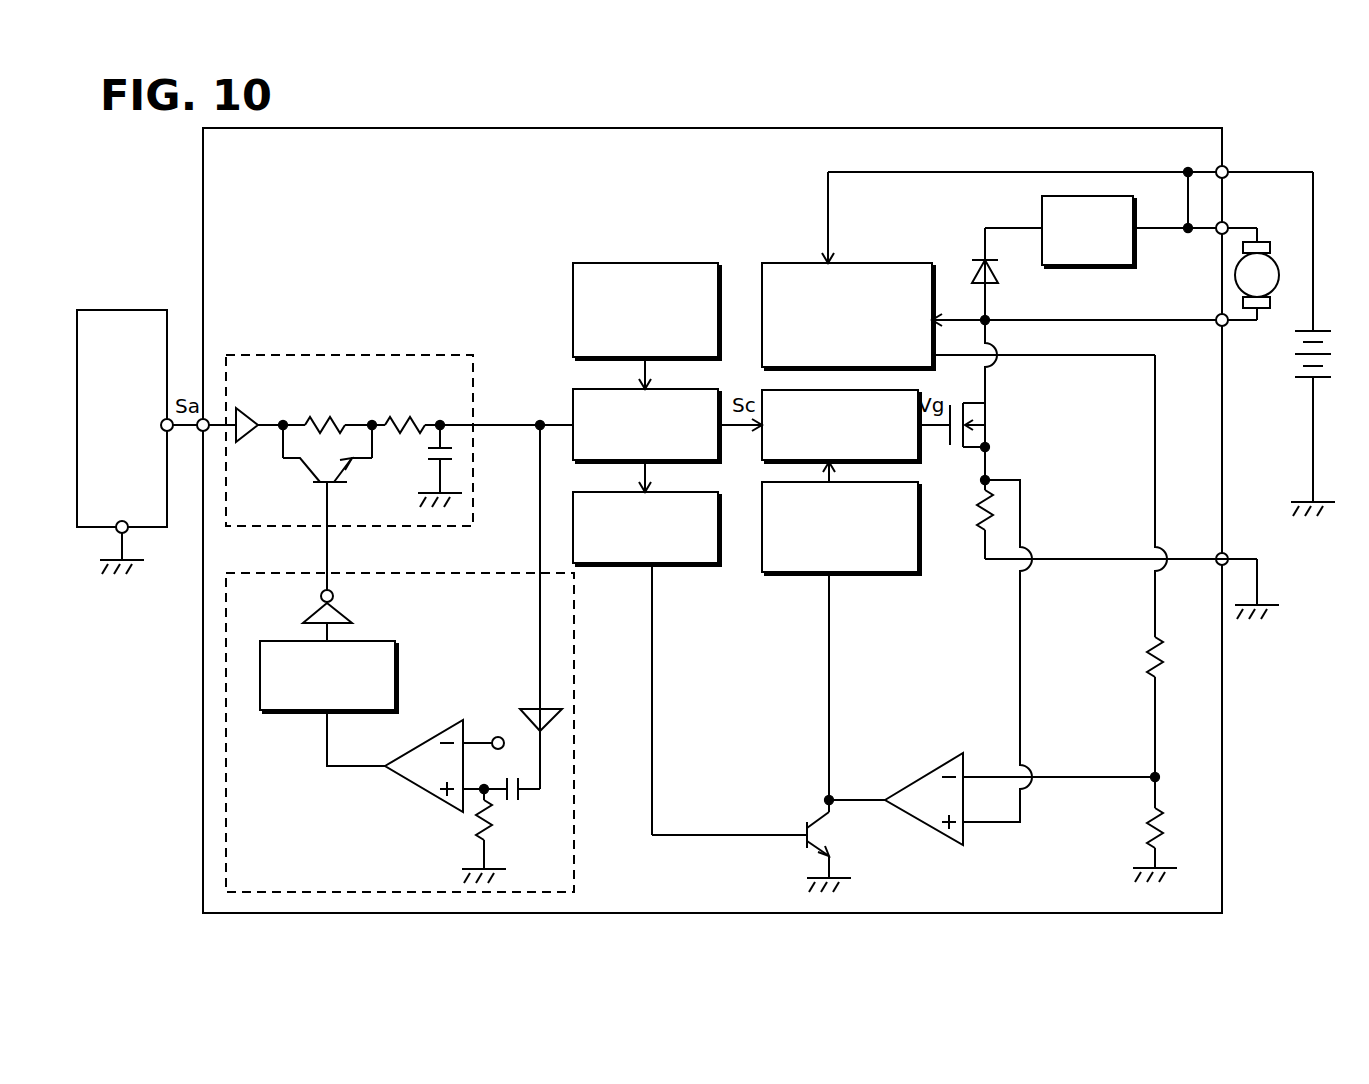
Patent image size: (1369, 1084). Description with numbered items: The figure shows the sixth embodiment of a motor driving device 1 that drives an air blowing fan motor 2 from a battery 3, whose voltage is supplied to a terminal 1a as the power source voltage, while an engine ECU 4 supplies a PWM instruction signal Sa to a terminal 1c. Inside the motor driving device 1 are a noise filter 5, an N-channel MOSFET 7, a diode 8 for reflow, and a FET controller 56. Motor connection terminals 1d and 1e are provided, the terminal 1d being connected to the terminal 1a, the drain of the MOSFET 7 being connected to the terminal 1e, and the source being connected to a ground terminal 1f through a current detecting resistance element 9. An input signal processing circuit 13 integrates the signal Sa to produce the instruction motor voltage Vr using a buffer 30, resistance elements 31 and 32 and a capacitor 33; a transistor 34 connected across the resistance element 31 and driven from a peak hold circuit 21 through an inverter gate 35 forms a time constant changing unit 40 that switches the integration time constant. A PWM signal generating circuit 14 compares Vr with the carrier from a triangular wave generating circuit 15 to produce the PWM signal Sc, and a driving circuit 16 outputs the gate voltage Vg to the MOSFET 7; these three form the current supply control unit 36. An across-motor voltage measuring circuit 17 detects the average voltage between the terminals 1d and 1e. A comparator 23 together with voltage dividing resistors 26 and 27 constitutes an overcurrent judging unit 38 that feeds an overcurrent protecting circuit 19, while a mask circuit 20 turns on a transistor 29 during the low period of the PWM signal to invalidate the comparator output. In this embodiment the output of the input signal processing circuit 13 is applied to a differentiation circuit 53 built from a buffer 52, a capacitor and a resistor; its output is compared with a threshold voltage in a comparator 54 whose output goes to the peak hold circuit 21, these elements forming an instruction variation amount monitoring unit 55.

The motor driving device 1 is at (618, 128).
The terminal 1a is at (1228, 168).
The terminal 1c is at (203, 432).
The terminal 1d is at (1228, 224).
The terminal 1e is at (1226, 326).
The terminal 1f is at (1228, 555).
The air blowing fan motor 2 is at (1278, 262).
The battery 3 is at (1296, 385).
The engine ECU 4 is at (124, 310).
The noise filter 5 is at (1085, 265).
The N-channel type MOSFET 7 is at (985, 410).
The diode for reflow 8 is at (993, 283).
The current detecting resistance element 9 is at (978, 512).
The input signal processing circuit 13 is at (372, 355).
The PWM signal generating circuit 14 is at (680, 389).
The triangular wave generating circuit 15 is at (680, 263).
The driving circuit 16 is at (905, 390).
The across-motor voltage measuring circuit 17 is at (880, 263).
The overcurrent protecting circuit 19 is at (905, 482).
The mask circuit 20 is at (688, 492).
The peak hold circuit 21 is at (397, 656).
The comparator 23 is at (920, 826).
The voltage dividing resistor 26 is at (1160, 645).
The voltage dividing resistor 27 is at (1160, 815).
The NPN transistor 29 is at (812, 835).
The buffer 30 is at (248, 410).
The resistance element 31 is at (348, 412).
The resistance element 32 is at (422, 412).
The capacitor 33 is at (430, 460).
The NPN transistor 34 is at (309, 476).
The inverter gate 35 is at (333, 600).
The current supply control unit 36 is at (744, 470).
The overcurrent judging unit 38 is at (986, 804).
The time constant changing unit 40 is at (345, 462).
The buffer 52 is at (560, 715).
The differentiation circuit 53 is at (496, 800).
The comparator 54 is at (406, 786).
The instruction variation amount monitoring unit 55 is at (574, 886).
The FET controller 56 is at (520, 238).